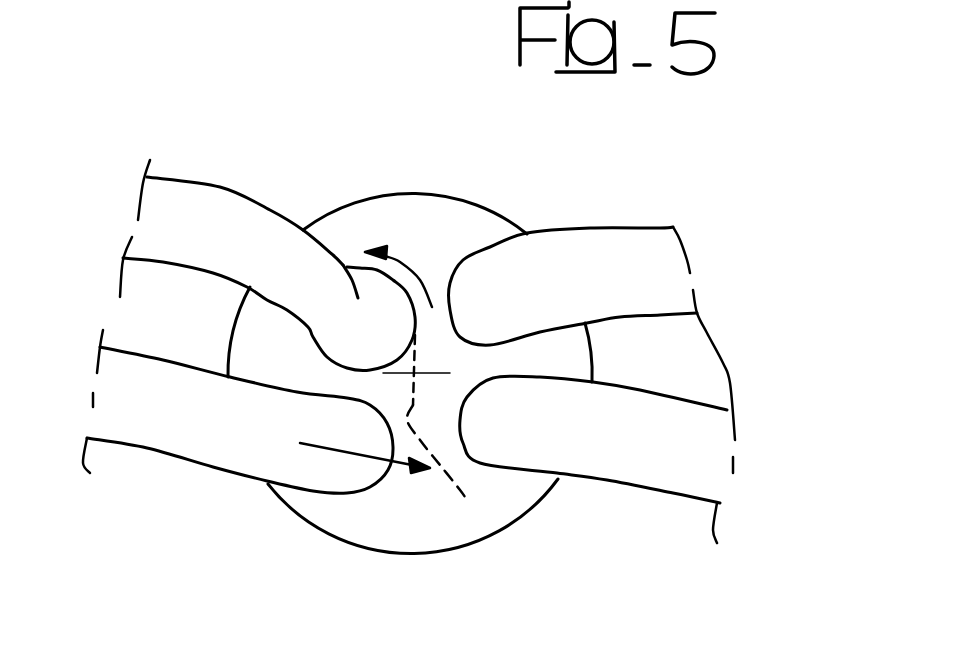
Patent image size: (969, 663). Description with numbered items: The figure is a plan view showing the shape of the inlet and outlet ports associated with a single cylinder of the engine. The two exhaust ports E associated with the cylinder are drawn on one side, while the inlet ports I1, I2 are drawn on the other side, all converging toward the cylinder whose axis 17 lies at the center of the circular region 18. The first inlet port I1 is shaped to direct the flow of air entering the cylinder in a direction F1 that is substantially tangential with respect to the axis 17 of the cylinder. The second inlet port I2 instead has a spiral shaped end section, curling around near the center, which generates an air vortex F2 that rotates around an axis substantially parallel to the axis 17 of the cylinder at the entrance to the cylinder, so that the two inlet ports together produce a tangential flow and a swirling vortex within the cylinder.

The first inlet port I1 is at (160, 433).
The second inlet port I2 is at (210, 205).
The exhaust ports E is at (658, 247).
The direction of air flow F1 is at (358, 452).
The air vortex F2 is at (413, 262).
The axis of the cylinder 17 is at (467, 500).
The crossing zone 18 is at (375, 195).